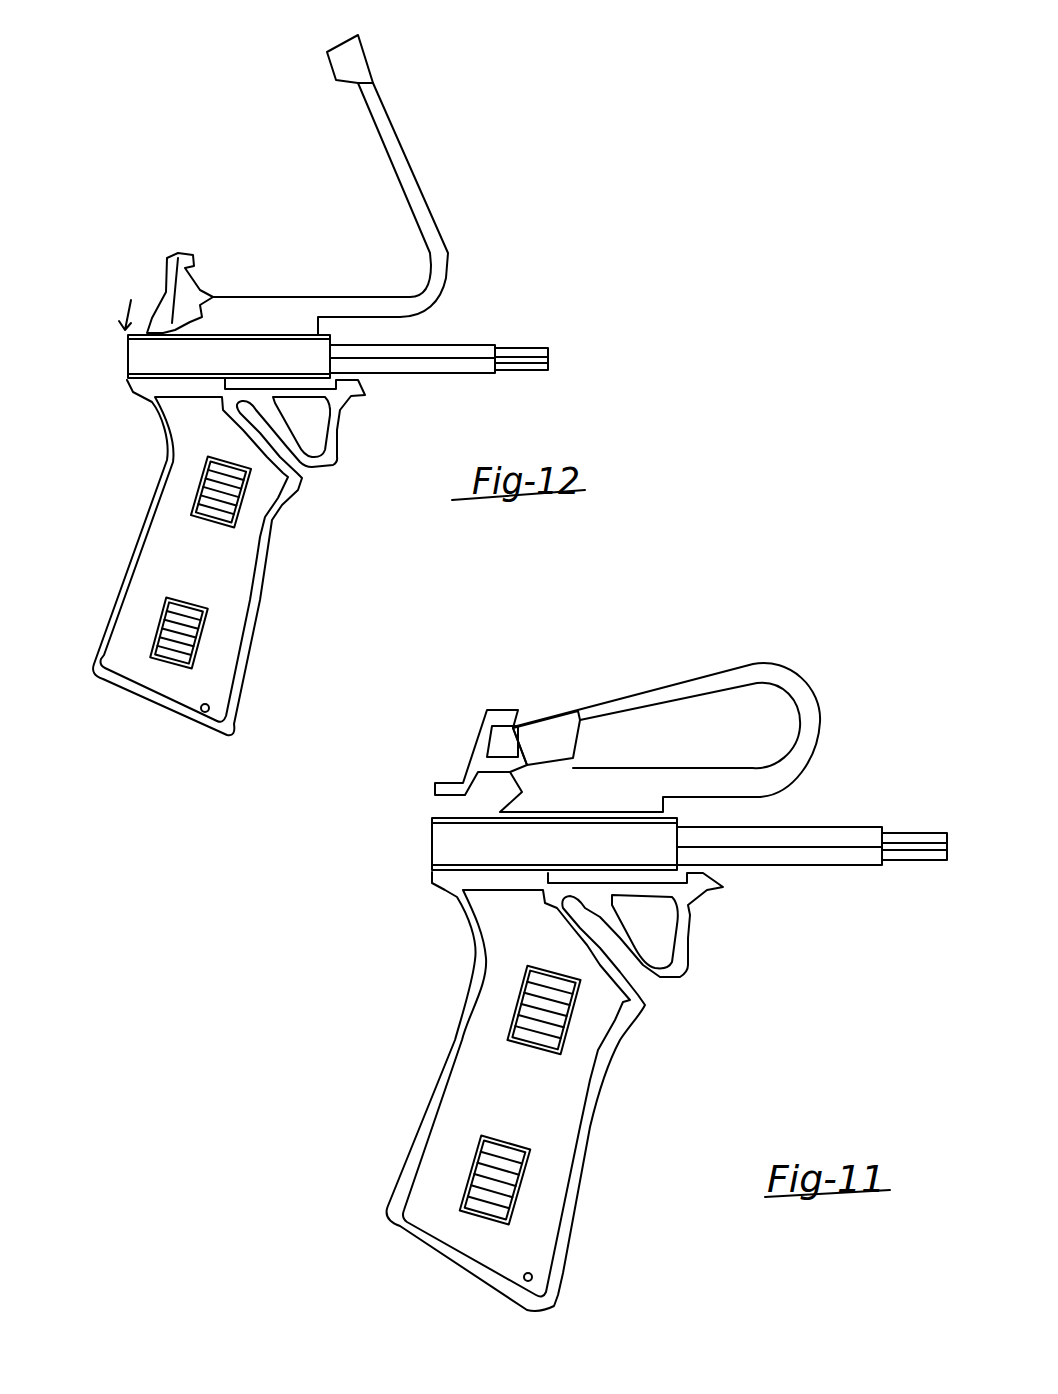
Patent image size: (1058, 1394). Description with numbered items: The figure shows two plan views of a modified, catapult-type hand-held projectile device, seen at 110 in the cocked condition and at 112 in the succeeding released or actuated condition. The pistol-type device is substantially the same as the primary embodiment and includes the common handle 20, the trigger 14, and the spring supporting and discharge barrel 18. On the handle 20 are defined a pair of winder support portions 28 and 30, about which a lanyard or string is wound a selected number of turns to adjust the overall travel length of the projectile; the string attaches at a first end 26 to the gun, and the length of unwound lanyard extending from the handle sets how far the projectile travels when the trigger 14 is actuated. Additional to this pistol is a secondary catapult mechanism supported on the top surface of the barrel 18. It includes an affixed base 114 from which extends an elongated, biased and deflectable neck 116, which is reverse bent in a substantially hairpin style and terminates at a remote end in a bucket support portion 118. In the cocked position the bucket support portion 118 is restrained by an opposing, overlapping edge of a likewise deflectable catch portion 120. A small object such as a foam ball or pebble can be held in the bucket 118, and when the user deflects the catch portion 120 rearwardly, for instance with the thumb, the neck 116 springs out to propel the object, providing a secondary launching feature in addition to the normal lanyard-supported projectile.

In FIG. 12, the trigger 14 is at (338, 441).
In FIG. 11, the trigger 14 is at (690, 946).
In FIG. 12, the spring supporting and discharge barrel 18 is at (483, 345).
In FIG. 11, the spring supporting and discharge barrel 18 is at (843, 823).
In FIG. 12, the handle 20 is at (168, 542).
In FIG. 11, the handle 20 is at (470, 1084).
In FIG. 12, the first end 26 is at (204, 713).
In FIG. 11, the first end 26 is at (527, 1282).
In FIG. 12, the winder support portion 28 is at (167, 645).
In FIG. 11, the winder support portion 28 is at (472, 1167).
In FIG. 12, the winder support portion 30 is at (197, 490).
In FIG. 11, the winder support portion 30 is at (521, 993).
In FIG. 11, the catapult-type hand-held projectile device 110 is at (370, 958).
In FIG. 12, the catapult-type hand-held projectile device 112 is at (170, 206).
In FIG. 12, the base 114 is at (275, 313).
In FIG. 11, the base 114 is at (615, 787).
In FIG. 12, the neck 116 is at (443, 247).
In FIG. 11, the neck 116 is at (810, 707).
In FIG. 12, the bucket support portion 118 is at (367, 60).
In FIG. 11, the bucket support portion 118 is at (553, 737).
In FIG. 12, the catch portion 120 is at (190, 258).
In FIG. 11, the catch portion 120 is at (513, 710).